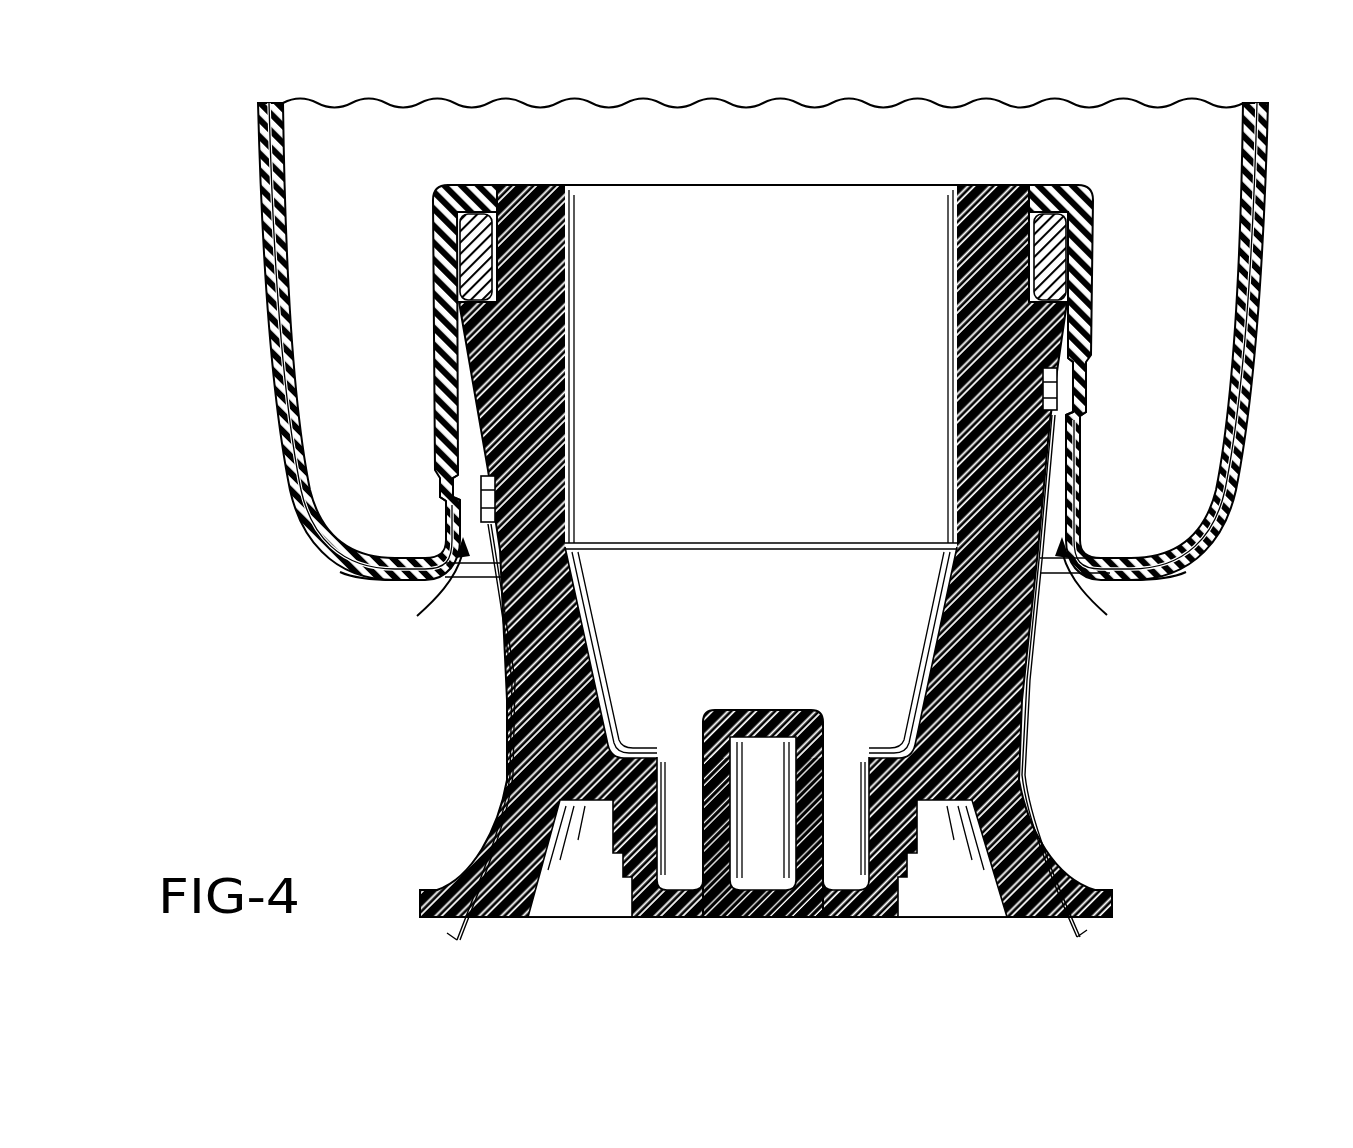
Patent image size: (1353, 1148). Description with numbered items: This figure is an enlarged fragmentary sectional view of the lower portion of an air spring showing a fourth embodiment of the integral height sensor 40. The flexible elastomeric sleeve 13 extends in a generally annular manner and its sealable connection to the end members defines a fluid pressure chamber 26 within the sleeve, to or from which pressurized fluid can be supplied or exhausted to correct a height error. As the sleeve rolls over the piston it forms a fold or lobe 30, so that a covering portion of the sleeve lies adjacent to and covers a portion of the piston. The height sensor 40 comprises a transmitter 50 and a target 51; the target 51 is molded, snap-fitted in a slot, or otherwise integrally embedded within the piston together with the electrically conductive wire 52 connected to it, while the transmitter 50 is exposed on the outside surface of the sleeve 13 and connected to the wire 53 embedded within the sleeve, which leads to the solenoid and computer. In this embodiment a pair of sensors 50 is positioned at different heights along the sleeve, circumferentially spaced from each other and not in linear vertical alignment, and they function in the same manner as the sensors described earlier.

The flexible elastomeric sleeve 13 is at (763, 363).
The fluid pressure chamber 26 is at (1213, 279).
The fold or lobe 30 is at (366, 579).
The height sensor 40 is at (763, 586).
The transmitter 50 is at (452, 488).
The target 51 is at (497, 480).
The wire 52 is at (505, 797).
The wire 53 is at (268, 226).